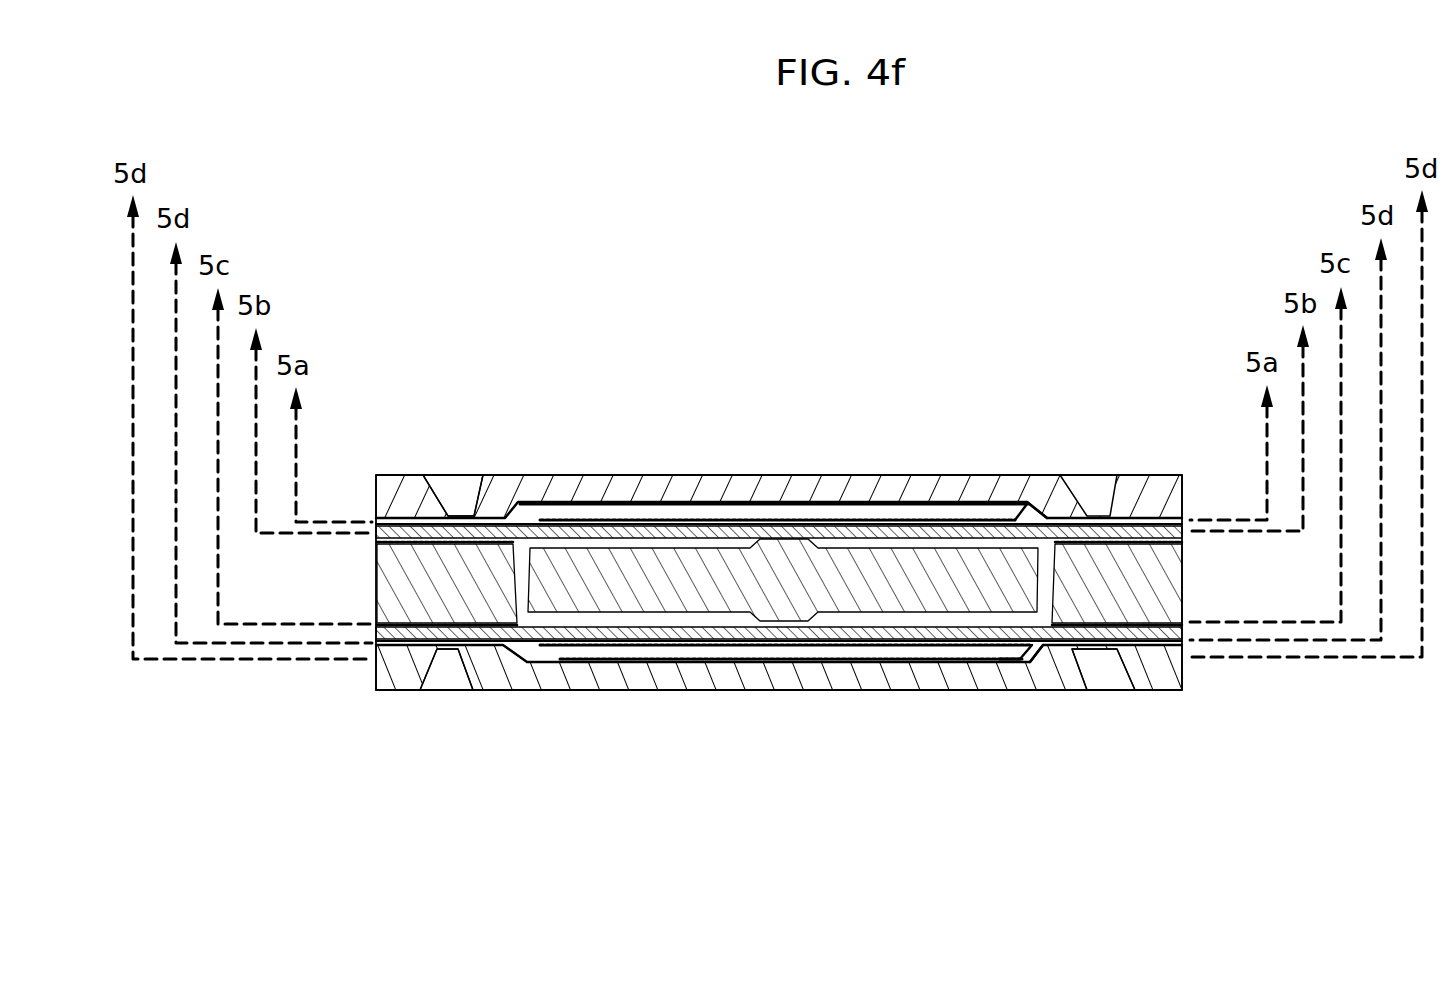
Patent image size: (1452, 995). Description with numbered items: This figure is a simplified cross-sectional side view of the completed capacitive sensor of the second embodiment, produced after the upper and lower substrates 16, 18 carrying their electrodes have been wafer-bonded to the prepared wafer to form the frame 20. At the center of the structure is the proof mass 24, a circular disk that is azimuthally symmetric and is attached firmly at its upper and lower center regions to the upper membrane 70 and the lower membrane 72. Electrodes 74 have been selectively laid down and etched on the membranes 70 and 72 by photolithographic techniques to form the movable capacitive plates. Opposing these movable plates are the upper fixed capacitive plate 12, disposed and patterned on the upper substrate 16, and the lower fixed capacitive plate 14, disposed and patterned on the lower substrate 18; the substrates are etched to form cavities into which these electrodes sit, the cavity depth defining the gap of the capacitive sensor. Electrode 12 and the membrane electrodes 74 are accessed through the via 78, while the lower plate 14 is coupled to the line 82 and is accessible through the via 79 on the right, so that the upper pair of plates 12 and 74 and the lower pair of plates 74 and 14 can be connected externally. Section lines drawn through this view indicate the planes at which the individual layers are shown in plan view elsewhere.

The upper fixed capacitive plate 12 is at (916, 530).
The lower fixed capacitive plate 14 is at (912, 643).
The upper substrate 16 is at (1140, 500).
The lower substrate 18 is at (1155, 672).
The frame 20 is at (1200, 578).
The proof mass 24 is at (863, 565).
The upper membrane 70 is at (1038, 530).
The lower membrane 72 is at (1035, 647).
The electrode 74 is at (640, 500).
The via 78 is at (483, 496).
The via 79 is at (1075, 668).
The line 82 is at (1030, 652).